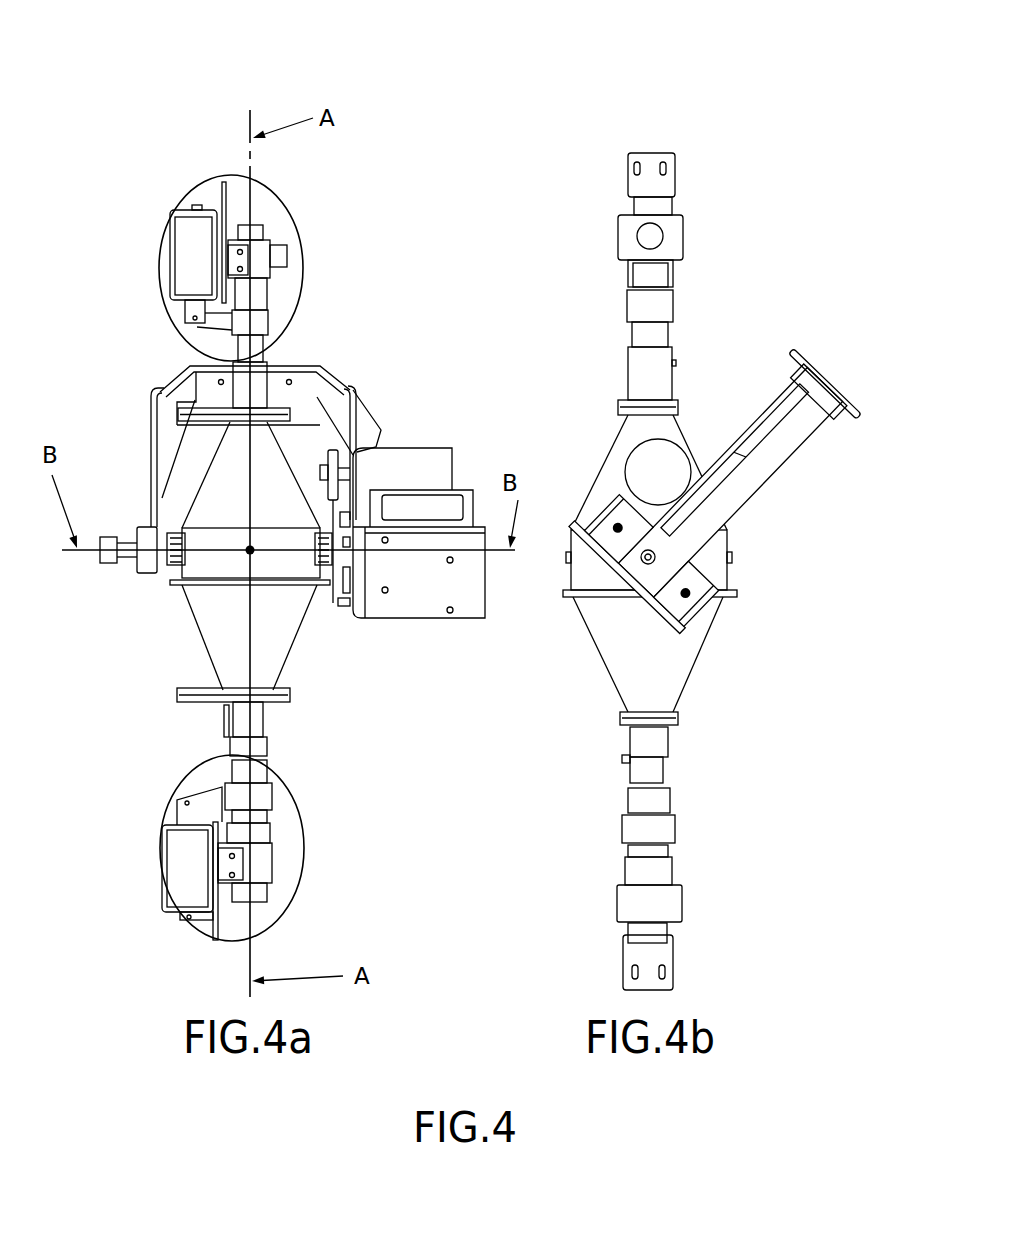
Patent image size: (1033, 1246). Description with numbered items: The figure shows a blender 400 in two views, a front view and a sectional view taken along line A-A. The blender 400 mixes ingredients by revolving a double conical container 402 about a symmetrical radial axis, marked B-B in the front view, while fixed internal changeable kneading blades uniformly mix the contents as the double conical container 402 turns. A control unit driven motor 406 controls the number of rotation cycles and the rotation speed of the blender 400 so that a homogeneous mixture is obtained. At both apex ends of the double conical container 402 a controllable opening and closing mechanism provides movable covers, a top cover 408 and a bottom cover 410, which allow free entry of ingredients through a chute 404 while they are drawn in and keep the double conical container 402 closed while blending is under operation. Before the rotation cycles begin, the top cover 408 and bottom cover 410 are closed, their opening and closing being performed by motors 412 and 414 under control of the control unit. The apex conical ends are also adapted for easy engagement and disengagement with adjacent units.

In FIG. 4B, the blender 400 is at (733, 55).
In FIG. 4A, the double conical container 402 is at (196, 642).
In FIG. 4A, the chute 404 is at (310, 296).
In FIG. 4A, the motor 406 is at (286, 918).
In FIG. 4B, the top cover 408 is at (706, 338).
In FIG. 4B, the bottom cover 410 is at (587, 714).
In FIG. 4A, the motor 412 is at (158, 251).
In FIG. 4A, the motor 414 is at (150, 901).